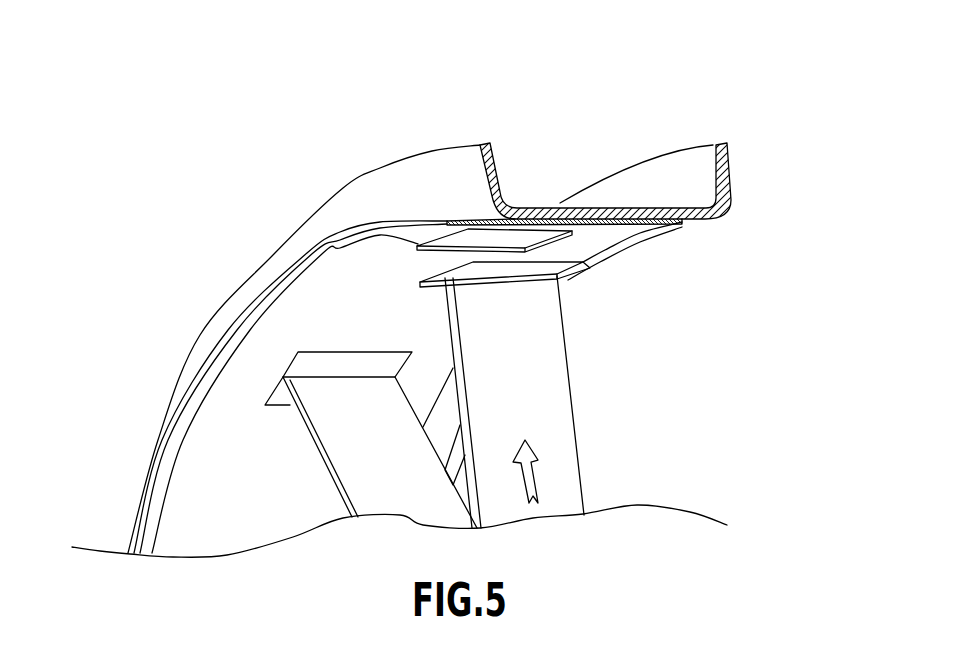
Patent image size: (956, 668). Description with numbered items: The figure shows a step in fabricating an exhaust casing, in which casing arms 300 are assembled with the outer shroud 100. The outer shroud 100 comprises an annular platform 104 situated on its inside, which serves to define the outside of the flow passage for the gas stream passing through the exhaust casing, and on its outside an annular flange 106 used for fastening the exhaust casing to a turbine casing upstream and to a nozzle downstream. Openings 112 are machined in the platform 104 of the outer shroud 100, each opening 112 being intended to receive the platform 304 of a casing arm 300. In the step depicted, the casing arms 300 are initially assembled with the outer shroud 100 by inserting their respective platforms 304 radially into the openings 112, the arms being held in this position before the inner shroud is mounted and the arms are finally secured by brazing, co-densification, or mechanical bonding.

The outer shroud 100 is at (484, 327).
The annular platform 104 is at (469, 214).
The annular flange 106 is at (545, 209).
The opening 112 is at (443, 243).
The casing arm 300 is at (437, 395).
The platform 304 is at (331, 413).